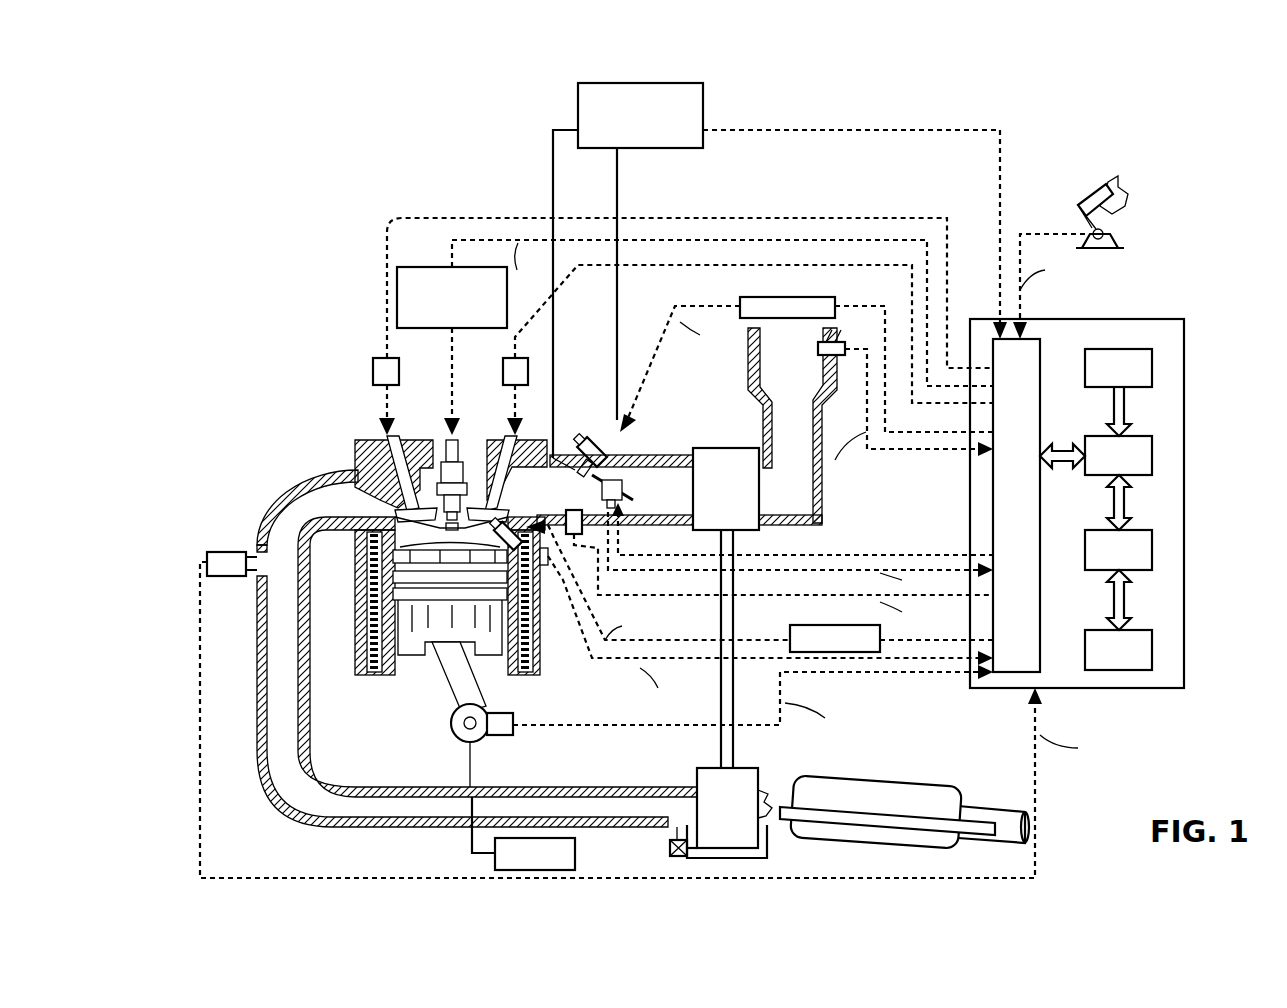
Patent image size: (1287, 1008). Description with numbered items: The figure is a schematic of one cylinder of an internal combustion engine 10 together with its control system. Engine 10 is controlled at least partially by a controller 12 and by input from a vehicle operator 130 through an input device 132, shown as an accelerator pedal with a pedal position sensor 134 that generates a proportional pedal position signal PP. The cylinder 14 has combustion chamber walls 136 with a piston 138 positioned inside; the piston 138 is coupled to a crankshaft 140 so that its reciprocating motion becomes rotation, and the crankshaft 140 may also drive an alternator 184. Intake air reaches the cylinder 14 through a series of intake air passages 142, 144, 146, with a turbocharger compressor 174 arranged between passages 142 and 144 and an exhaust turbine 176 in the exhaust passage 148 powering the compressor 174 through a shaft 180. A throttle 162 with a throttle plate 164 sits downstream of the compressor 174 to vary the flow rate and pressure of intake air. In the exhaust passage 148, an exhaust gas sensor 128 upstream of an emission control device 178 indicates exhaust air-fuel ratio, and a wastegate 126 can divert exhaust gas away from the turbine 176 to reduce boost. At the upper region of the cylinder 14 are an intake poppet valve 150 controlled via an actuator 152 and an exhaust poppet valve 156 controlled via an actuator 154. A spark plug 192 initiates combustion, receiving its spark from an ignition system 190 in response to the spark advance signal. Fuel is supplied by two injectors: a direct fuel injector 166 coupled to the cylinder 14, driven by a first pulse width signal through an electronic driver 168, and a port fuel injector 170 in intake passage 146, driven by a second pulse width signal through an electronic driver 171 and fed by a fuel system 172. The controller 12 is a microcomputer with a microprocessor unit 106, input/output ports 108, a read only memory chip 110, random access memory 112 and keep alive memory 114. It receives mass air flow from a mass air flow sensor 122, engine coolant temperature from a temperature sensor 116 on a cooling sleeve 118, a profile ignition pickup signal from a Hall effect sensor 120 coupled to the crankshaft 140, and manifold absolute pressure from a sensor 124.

The internal combustion engine 10 is at (300, 399).
The controller 12 is at (1184, 321).
The cylinder 14 is at (358, 556).
The microprocessor unit 106 is at (1152, 452).
The input/output ports 108 is at (1040, 347).
The read only memory chip 110 is at (1152, 366).
The random access memory 112 is at (1152, 548).
The keep alive memory 114 is at (1152, 648).
The temperature sensor 116 is at (549, 586).
The cooling sleeve 118 is at (543, 666).
The Hall effect sensor 120 is at (506, 738).
The mass air flow sensor 122 is at (840, 342).
The manifold pressure sensor 124 is at (575, 535).
The wastegate 126 is at (670, 845).
The exhaust gas sensor 128 is at (207, 555).
The vehicle operator 130 is at (1130, 195).
The input device 132 is at (1084, 206).
The pedal position sensor 134 is at (1108, 236).
The combustion chamber walls 136 is at (398, 666).
The piston 138 is at (437, 648).
The crankshaft 140 is at (463, 743).
The intake air passage 142 is at (792, 426).
The intake air passage 144 is at (615, 490).
The intake air passage 146 is at (574, 491).
The exhaust passage 148 is at (462, 648).
The intake poppet valve 150 is at (472, 470).
The actuator 152 is at (503, 372).
The actuator 154 is at (373, 372).
The exhaust poppet valve 156 is at (400, 492).
The throttle 162 is at (618, 478).
The throttle plate 164 is at (583, 466).
The fuel injector 166 is at (740, 570).
The electronic driver 168 is at (792, 626).
The fuel injector 170 is at (603, 443).
The electronic driver 171 is at (740, 300).
The fuel system 172 is at (703, 95).
The compressor 174 is at (726, 489).
The exhaust turbine 176 is at (734, 808).
The emission control device 178 is at (878, 778).
The shaft 180 is at (735, 750).
The alternator 184 is at (523, 833).
The ignition system 190 is at (410, 266).
The spark plug 192 is at (446, 470).